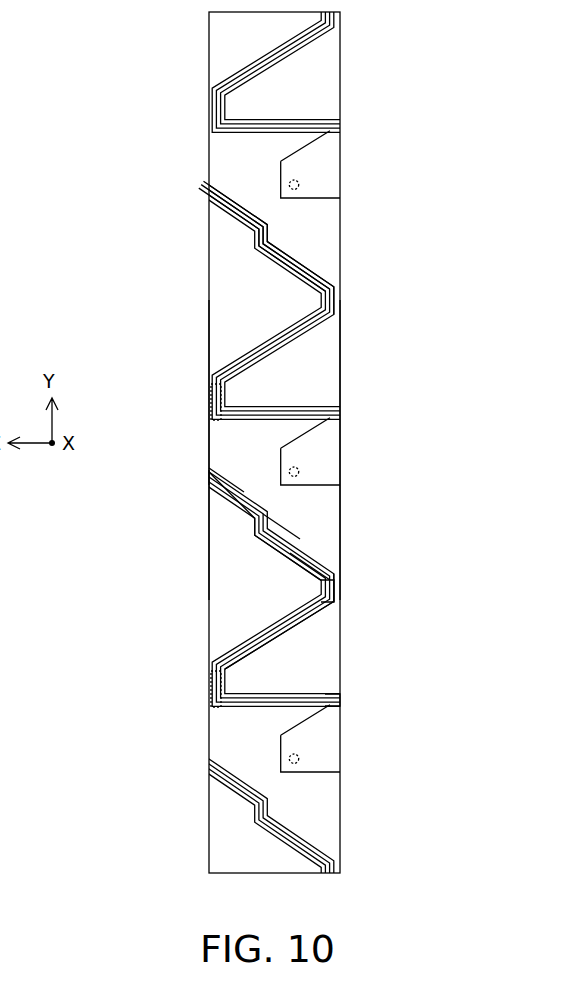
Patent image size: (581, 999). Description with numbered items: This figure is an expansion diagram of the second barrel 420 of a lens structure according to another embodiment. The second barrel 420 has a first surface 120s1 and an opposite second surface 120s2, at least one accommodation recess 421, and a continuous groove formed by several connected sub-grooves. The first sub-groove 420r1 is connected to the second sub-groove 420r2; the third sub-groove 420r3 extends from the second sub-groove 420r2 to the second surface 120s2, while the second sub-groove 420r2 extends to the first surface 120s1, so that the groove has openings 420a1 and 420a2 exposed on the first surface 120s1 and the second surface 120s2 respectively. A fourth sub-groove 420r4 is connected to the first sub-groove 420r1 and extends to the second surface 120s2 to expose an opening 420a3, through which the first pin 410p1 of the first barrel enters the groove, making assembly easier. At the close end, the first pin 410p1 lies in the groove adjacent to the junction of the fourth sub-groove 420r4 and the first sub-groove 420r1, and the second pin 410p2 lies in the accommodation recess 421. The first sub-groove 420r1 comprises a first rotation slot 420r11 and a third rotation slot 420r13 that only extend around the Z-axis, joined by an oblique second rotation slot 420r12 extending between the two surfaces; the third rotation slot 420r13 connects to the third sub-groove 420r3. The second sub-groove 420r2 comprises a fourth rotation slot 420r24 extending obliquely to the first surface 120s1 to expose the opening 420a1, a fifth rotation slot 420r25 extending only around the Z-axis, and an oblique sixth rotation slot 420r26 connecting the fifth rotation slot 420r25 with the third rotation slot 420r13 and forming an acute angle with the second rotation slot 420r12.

The second barrel 420 is at (188, 63).
The accommodation recess 421 is at (331, 182).
The first surface 120s1 is at (209, 354).
The second surface 120s2 is at (341, 392).
The first pin 410p1 is at (212, 402).
The second pin 410p2 is at (299, 472).
The opening 420a1 is at (209, 476).
The opening 420a2 is at (343, 605).
The opening 420a3 is at (340, 695).
The first sub-groove 420r1 is at (102, 576).
The first rotation slot 420r11 is at (217, 668).
The second rotation slot 420r12 is at (276, 640).
The third rotation slot 420r13 is at (322, 596).
The second sub-groove 420r2 is at (433, 502).
The fourth rotation slot 420r24 is at (238, 492).
The fifth rotation slot 420r25 is at (267, 520).
The sixth rotation slot 420r26 is at (298, 550).
The third sub-groove 420r3 is at (343, 598).
The fourth sub-groove 420r4 is at (311, 703).